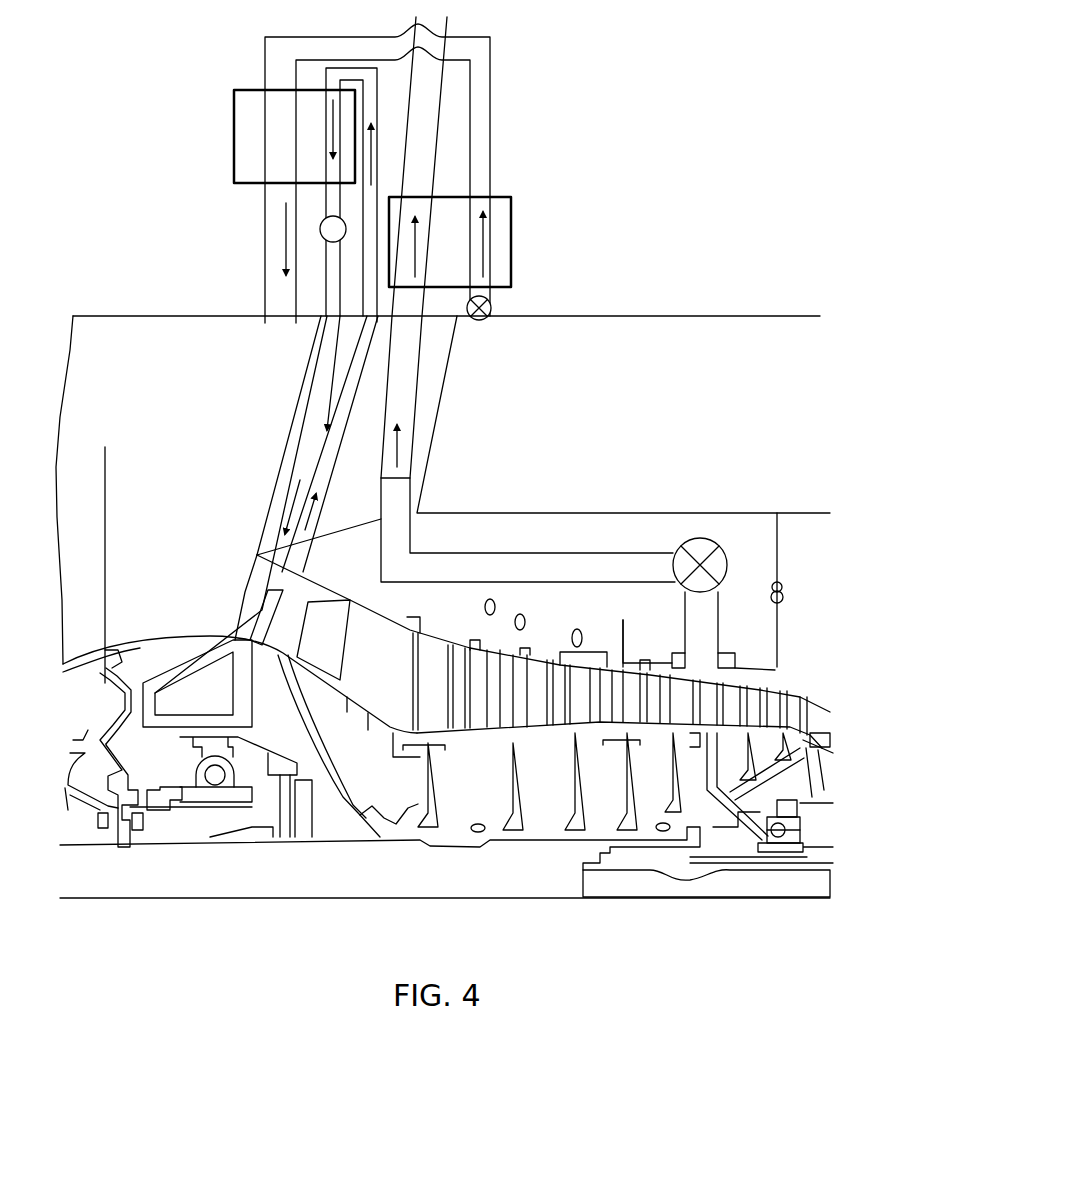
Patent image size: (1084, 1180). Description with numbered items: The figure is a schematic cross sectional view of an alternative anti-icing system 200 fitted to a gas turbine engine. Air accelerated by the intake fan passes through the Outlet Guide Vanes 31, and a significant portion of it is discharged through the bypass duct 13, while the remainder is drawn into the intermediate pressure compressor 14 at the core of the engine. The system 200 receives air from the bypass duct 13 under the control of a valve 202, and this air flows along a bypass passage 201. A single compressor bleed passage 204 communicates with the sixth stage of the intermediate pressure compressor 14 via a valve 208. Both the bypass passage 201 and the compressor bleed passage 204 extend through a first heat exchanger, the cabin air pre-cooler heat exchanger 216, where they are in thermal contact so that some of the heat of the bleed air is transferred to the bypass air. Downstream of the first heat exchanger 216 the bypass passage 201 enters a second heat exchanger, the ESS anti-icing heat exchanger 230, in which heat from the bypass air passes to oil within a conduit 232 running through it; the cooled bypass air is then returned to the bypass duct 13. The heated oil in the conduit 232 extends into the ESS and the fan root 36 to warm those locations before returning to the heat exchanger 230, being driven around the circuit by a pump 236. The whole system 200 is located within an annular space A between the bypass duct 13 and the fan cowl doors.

The bypass duct 13 is at (225, 378).
The intermediate pressure compressor 14 is at (630, 690).
The Outlet Guide Vanes 31 is at (437, 408).
The fan root 36 is at (192, 640).
The anti-icing system 200 is at (682, 264).
The bypass passage 201 is at (491, 93).
The valve 202 is at (494, 306).
The compressor bleed passage 204 is at (617, 550).
The valve 208 is at (707, 540).
The cabin air pre-cooler heat exchanger 216 is at (511, 238).
The ESS anti-icing heat exchanger 230 is at (234, 155).
The conduit 232 is at (300, 466).
The pump 236 is at (320, 229).
The annular space A is at (672, 68).